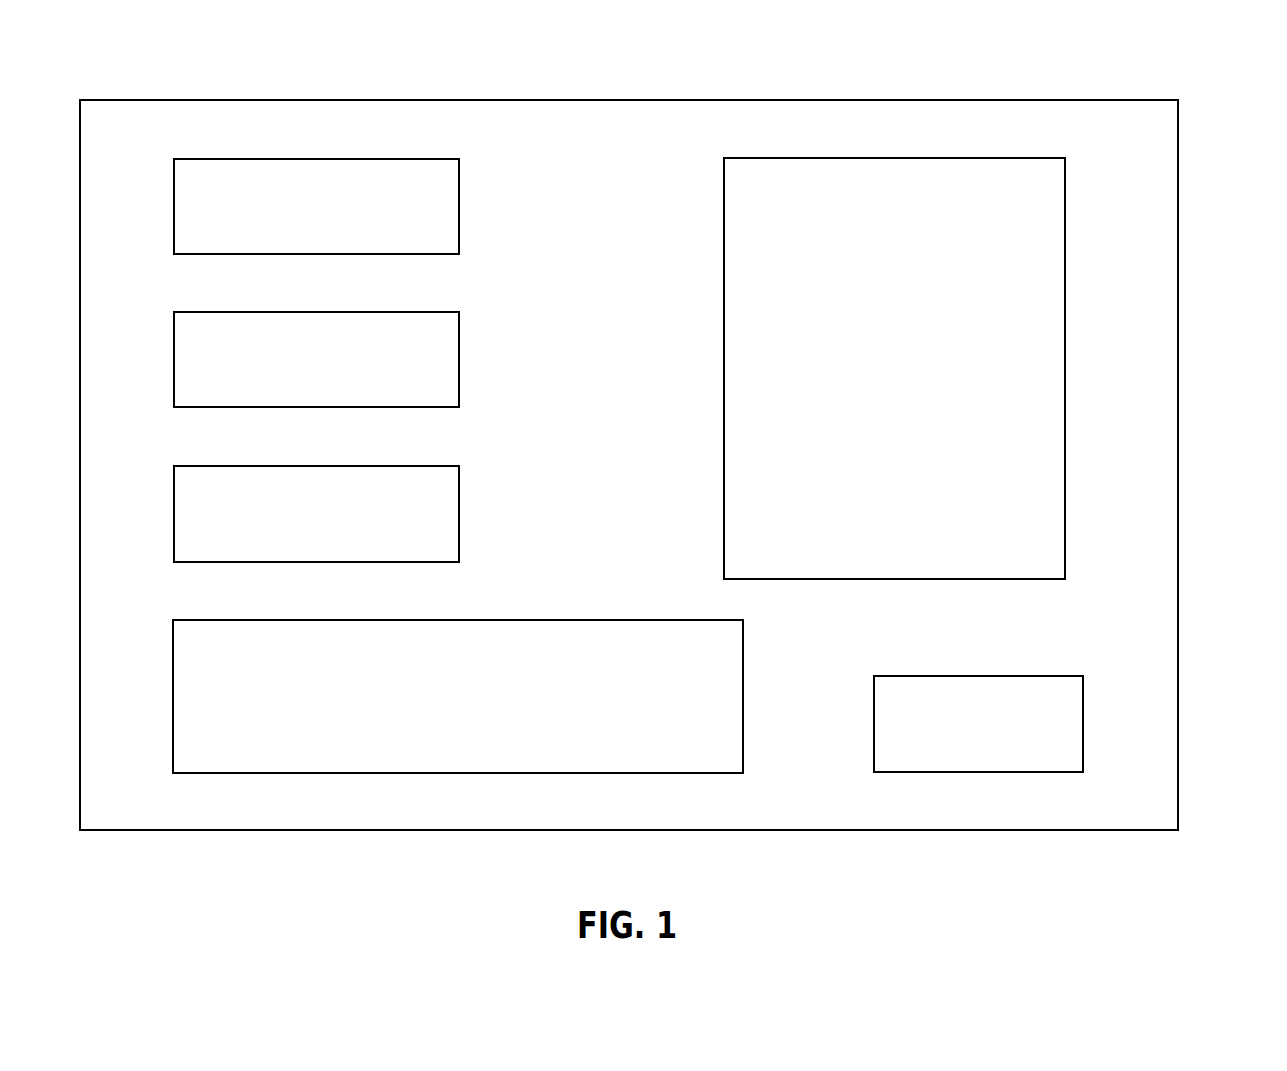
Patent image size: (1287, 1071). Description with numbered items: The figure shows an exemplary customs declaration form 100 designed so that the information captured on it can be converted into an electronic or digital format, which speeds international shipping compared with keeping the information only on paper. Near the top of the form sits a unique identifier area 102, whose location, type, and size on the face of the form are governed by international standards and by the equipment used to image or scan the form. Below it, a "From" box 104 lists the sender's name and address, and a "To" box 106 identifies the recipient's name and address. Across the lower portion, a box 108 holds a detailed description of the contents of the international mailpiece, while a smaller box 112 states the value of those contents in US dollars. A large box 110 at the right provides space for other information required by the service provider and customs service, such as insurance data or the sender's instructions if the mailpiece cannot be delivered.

The customs declaration form 100 is at (1275, 59).
The unique identifier area 102 is at (459, 205).
The "From" box 104 is at (459, 359).
The "To" box 106 is at (459, 511).
The box 108 is at (743, 695).
The box 110 is at (1065, 368).
The box 112 is at (1083, 722).